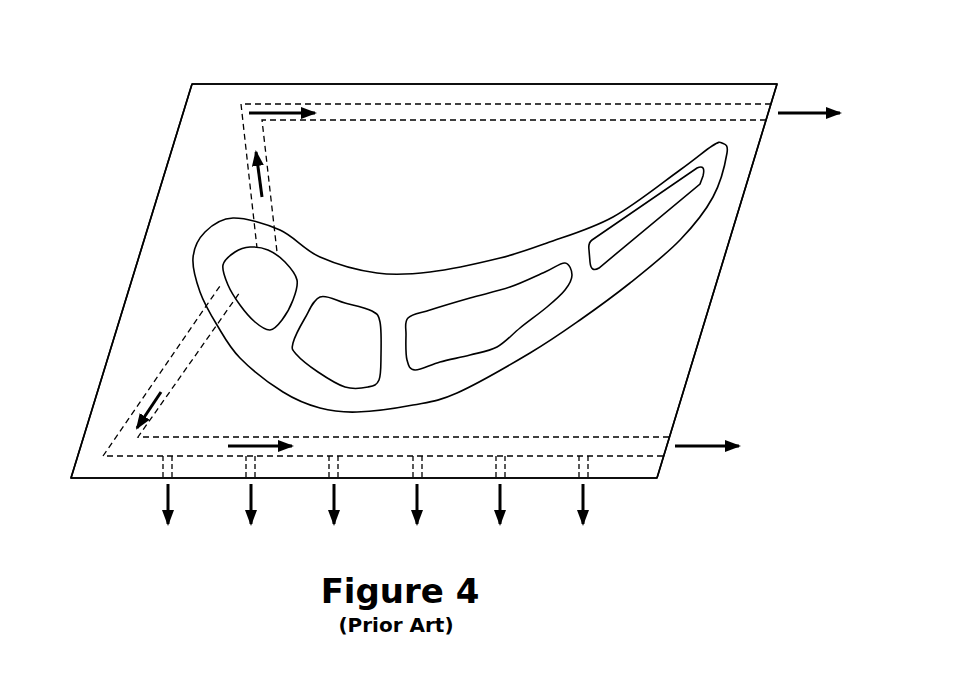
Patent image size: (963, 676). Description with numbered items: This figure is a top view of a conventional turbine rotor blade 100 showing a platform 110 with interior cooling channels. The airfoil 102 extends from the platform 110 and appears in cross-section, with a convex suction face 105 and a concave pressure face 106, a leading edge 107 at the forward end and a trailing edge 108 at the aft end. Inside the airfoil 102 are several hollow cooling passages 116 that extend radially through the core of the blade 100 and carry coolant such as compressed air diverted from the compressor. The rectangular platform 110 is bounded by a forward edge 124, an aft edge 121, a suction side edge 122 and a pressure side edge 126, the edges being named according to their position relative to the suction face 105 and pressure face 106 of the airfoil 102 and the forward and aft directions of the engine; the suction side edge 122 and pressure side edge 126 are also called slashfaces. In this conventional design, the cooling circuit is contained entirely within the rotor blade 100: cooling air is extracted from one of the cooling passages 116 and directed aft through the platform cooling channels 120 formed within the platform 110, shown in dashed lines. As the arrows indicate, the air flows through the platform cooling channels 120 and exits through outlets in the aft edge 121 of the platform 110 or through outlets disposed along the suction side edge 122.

The turbine rotor blade 100 is at (95, 87).
The airfoil 102 is at (170, 250).
The suction face 105 is at (457, 393).
The pressure face 106 is at (472, 266).
The leading edge 107 is at (208, 232).
The trailing edge 108 is at (727, 147).
The platform 110 is at (127, 341).
The cooling passages 116 is at (241, 296).
The platform cooling channels 120 is at (243, 143).
The aft edge 121 is at (707, 320).
The suction side edge 122 is at (110, 479).
The forward edge 124 is at (123, 305).
The pressure side edge 126 is at (678, 84).